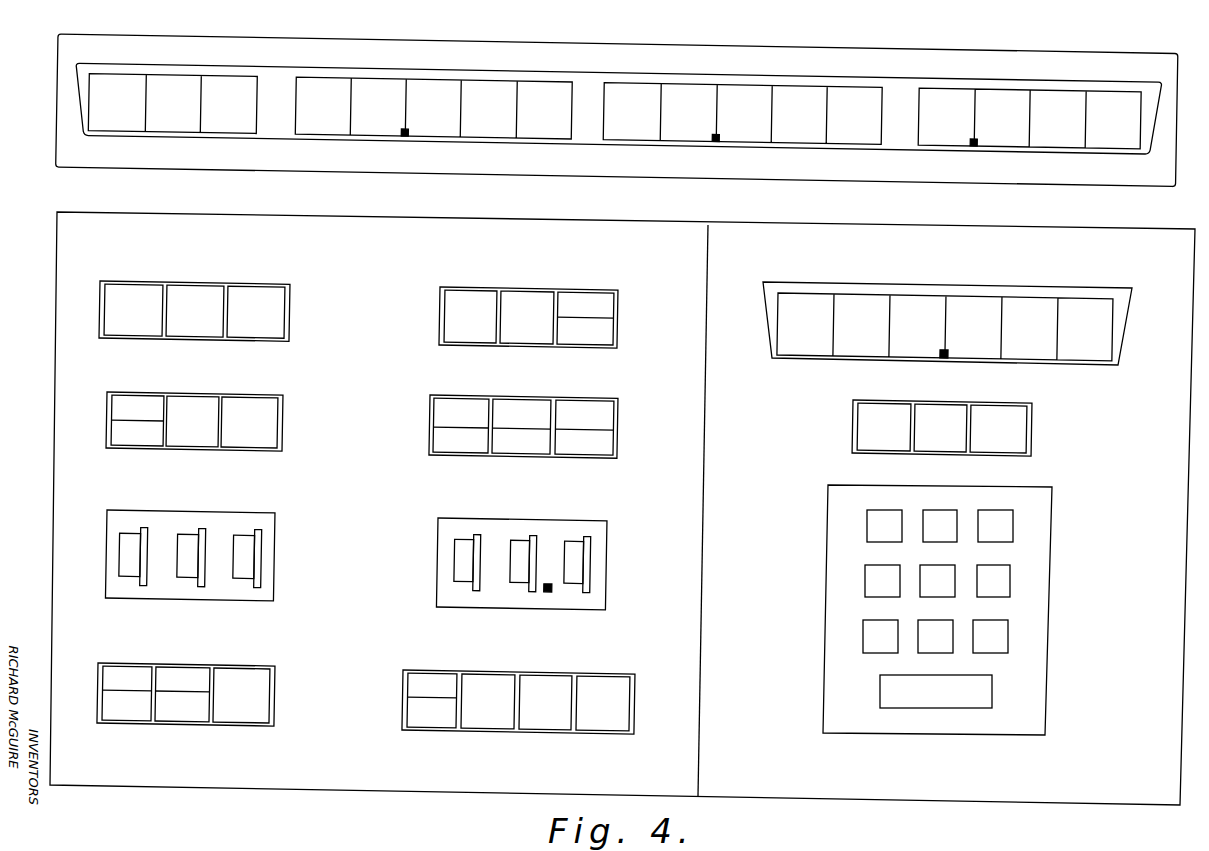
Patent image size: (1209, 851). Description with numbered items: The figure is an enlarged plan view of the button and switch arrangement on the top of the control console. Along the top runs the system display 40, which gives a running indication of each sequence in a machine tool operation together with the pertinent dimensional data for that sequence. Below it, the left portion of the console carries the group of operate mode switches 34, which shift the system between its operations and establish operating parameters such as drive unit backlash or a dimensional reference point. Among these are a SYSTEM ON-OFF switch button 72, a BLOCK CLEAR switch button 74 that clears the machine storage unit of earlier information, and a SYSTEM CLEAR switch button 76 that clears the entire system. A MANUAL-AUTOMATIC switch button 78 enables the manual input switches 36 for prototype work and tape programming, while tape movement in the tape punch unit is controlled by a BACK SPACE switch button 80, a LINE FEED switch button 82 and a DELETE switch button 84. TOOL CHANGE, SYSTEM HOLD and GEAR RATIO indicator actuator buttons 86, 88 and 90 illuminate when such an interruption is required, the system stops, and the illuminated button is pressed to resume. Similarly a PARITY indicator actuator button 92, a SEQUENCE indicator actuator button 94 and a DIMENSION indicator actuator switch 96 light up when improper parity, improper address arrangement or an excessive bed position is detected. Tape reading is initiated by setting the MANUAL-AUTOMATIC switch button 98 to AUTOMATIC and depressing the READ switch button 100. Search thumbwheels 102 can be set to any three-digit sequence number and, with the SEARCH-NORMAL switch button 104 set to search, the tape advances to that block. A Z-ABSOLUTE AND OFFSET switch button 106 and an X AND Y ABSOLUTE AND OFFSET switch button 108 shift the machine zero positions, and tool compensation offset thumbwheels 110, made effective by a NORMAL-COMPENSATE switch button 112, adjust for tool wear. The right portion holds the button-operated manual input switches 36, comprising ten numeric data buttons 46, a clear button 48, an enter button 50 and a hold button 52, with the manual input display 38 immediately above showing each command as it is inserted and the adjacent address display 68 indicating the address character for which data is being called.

The operate mode switches 34 is at (85, 205).
The system display 40 is at (110, 25).
The manual input switches 36 is at (1070, 468).
The manual input display 38 is at (1007, 290).
The numeric data buttons 46 is at (980, 510).
The clear button 48 is at (870, 400).
The enter button 50 is at (1018, 400).
The hold button 52 is at (938, 400).
The address display 68 is at (805, 283).
The SYSTEM ON-OFF switch button 72 is at (146, 392).
The BLOCK CLEAR switch button 74 is at (206, 392).
The SYSTEM CLEAR switch button 76 is at (264, 392).
The MANUAL-AUTOMATIC switch button 78 is at (425, 670).
The BACK SPACE switch button 80 is at (492, 670).
The LINE FEED switch button 82 is at (554, 670).
The DELETE switch button 84 is at (608, 670).
The TOOL CHANGE indicator actuator button 86 is at (457, 287).
The SYSTEM HOLD indicator actuator button 88 is at (525, 287).
The GEAR RATIO indicator actuator button 90 is at (583, 287).
The PARITY indicator actuator button 92 is at (138, 281).
The SEQUENCE indicator actuator button 94 is at (206, 281).
The DIMENSION indicator actuator switch 96 is at (264, 281).
The MANUAL-AUTOMATIC switch button 98 is at (251, 663).
The READ switch button 100 is at (120, 663).
The search thumbwheels 102 is at (108, 520).
The SEARCH-NORMAL switch button 104 is at (190, 663).
The Z-ABSOLUTE AND OFFSET switch button 106 is at (522, 395).
The X AND Y ABSOLUTE AND OFFSET switch button 108 is at (596, 395).
The tool compensation offset thumbwheels 110 is at (440, 553).
The NORMAL-COMPENSATE switch button 112 is at (440, 395).